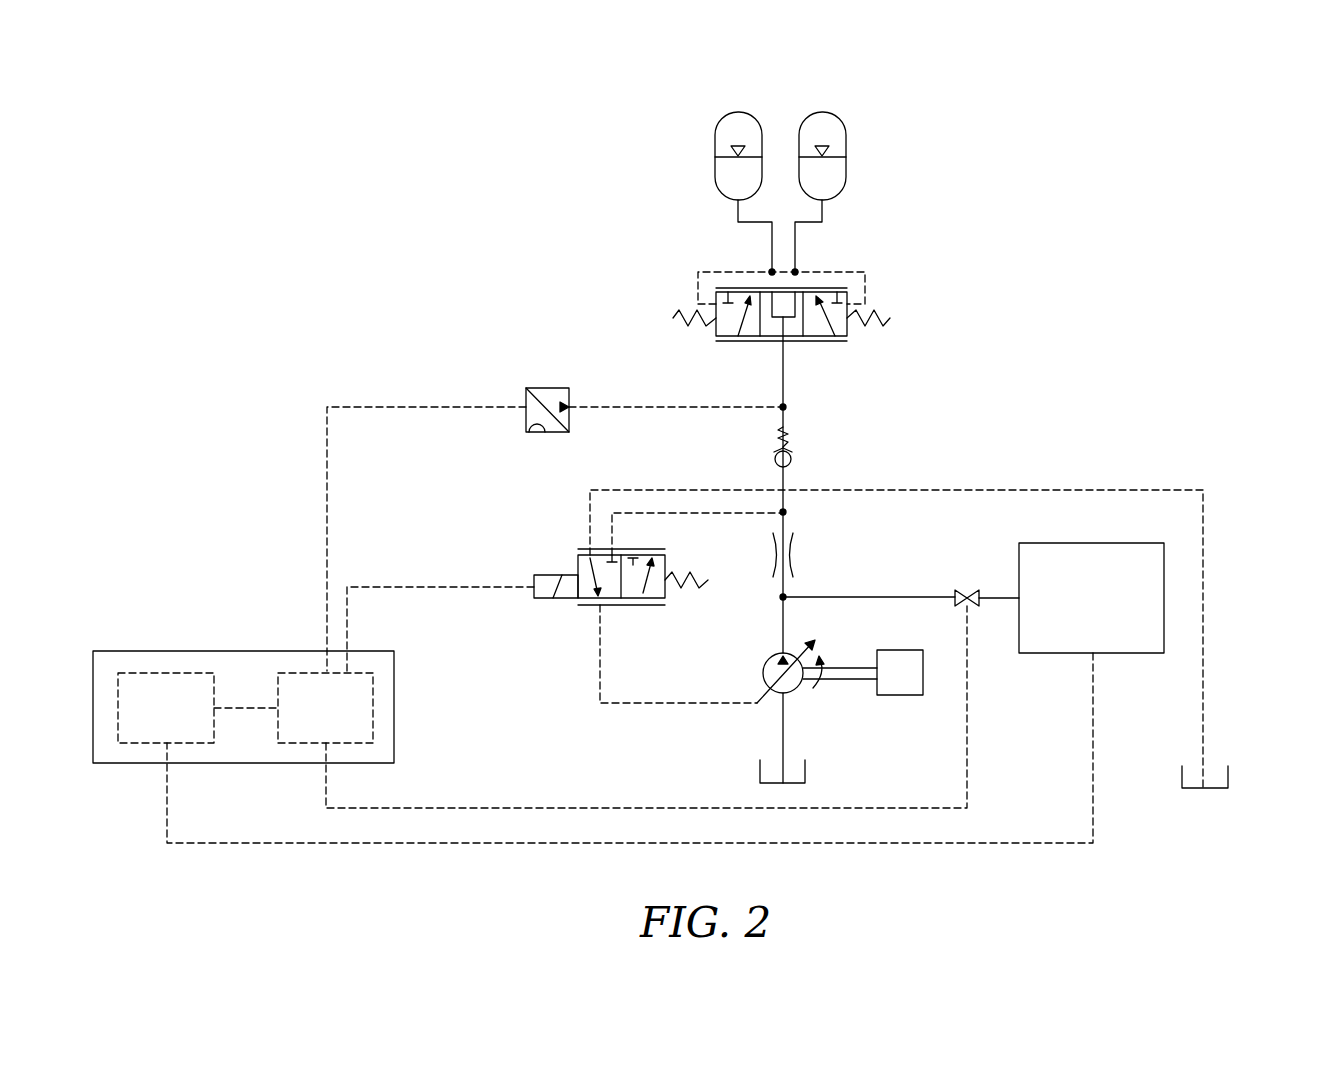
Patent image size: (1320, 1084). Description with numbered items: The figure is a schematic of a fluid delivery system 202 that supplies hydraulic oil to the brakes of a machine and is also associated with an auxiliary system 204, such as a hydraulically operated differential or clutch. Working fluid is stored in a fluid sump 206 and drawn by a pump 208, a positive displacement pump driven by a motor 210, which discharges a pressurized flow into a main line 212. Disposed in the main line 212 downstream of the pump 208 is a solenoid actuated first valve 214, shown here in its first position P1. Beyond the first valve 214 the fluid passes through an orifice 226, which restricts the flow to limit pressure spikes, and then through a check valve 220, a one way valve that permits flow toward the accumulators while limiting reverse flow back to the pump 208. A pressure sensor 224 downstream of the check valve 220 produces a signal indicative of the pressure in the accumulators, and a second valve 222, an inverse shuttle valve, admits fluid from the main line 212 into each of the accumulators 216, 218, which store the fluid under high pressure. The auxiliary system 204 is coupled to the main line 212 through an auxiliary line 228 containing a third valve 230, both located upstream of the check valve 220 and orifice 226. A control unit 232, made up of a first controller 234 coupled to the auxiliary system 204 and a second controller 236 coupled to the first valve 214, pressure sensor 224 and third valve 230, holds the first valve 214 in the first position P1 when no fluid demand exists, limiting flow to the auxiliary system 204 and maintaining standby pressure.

The fluid delivery system 202 is at (1163, 162).
The auxiliary system 204 is at (1091, 598).
The fluid sump 206 is at (758, 766).
The pump 208 is at (797, 688).
The motor 210 is at (898, 697).
The main line 212 is at (785, 366).
The first valve 214 is at (577, 557).
The accumulator 216 is at (737, 110).
The accumulator 218 is at (822, 110).
The check valve 220 is at (793, 455).
The second valve 222 is at (732, 342).
The pressure sensor 224 is at (548, 387).
The orifice 226 is at (795, 556).
The auxiliary line 228 is at (901, 594).
The third valve 230 is at (963, 589).
The control unit 232 is at (140, 650).
The first controller 234 is at (166, 708).
The second controller 236 is at (325, 708).
The first position P1 is at (568, 607).